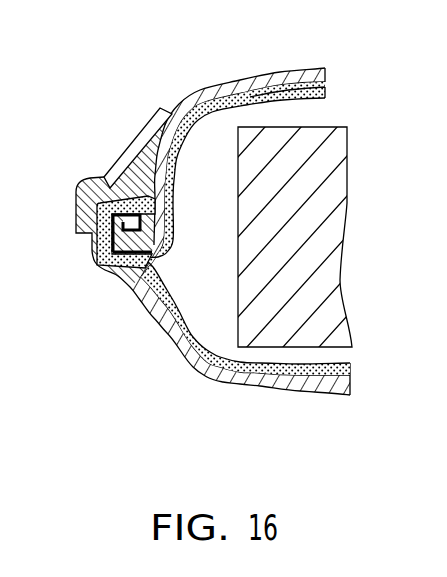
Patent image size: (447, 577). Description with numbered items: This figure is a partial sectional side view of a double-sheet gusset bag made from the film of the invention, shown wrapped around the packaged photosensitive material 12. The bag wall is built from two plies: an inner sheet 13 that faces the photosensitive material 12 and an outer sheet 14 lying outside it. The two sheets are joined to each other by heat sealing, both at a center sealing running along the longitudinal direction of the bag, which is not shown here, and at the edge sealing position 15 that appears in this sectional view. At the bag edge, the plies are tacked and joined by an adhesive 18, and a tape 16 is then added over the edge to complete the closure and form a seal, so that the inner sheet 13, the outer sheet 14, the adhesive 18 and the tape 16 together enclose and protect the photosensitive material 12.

The photosensitive material 12 is at (342, 232).
The inner sheet 13 is at (322, 100).
The outer sheet 14 is at (276, 74).
The edge sealing position 15 is at (111, 274).
The tape 16 is at (84, 188).
The adhesive 18 is at (127, 157).